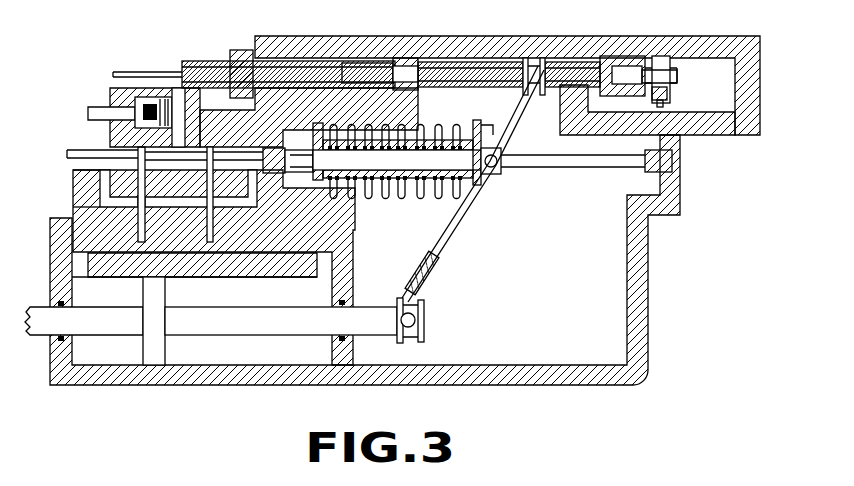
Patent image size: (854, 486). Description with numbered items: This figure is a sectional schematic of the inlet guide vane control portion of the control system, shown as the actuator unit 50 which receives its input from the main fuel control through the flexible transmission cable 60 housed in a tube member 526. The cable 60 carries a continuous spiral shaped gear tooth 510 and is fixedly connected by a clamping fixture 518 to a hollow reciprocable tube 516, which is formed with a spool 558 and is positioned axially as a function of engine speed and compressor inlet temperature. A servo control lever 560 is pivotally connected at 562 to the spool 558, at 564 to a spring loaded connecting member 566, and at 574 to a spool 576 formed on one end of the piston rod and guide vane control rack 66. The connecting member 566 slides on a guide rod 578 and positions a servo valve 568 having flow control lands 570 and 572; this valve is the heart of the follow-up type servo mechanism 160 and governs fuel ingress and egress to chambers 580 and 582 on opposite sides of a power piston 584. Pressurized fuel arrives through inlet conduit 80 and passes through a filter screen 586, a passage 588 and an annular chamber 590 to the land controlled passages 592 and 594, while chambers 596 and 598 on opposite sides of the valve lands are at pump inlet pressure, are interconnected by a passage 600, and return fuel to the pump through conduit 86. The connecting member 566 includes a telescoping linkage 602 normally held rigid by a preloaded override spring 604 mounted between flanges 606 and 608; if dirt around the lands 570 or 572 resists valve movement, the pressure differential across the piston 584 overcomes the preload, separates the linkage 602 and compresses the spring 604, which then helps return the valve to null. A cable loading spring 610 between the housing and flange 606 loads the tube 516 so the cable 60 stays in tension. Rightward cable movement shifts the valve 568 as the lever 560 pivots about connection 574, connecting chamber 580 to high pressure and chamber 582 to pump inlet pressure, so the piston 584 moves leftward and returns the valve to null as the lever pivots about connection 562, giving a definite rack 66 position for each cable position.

The regulator assembly 50 is at (413, 36).
The flexible transmission cable 60 is at (166, 72).
The rack and rod 66 is at (37, 332).
The conduit 80 is at (100, 108).
The conduit 86 is at (67, 154).
The follow-up type servo mechanism 160 is at (418, 177).
The spiral shaped gear tooth 510 is at (295, 65).
The hollow reciprocable tube 516 is at (537, 75).
The clamping fixture 518 is at (627, 64).
The tube member 526 is at (196, 62).
The spool 558 is at (533, 72).
The servo control lever 560 is at (512, 133).
The pivotal connection 562 is at (534, 93).
The pivotal connection 564 is at (491, 178).
The spring loaded connecting member 566 is at (474, 128).
The servo valve 568 is at (192, 157).
The flow control land 570 is at (232, 152).
The flow control land 572 is at (105, 188).
The pivotal connection 574 is at (418, 313).
The spool 576 is at (424, 330).
The guide rod 578 is at (582, 165).
The chamber 580 is at (227, 299).
The chamber 582 is at (130, 300).
The power piston 584 is at (155, 351).
The filter screen 586 is at (148, 100).
The passage 588 is at (178, 108).
The annular chamber 590 is at (160, 168).
The servo valve land controlled passage 592 is at (213, 220).
The servo valve land controlled passage 594 is at (145, 226).
The chamber 596 is at (557, 250).
The chamber 598 is at (90, 164).
The passage 600 is at (100, 194).
The telescoping linkage 602 is at (414, 195).
The override spring 604 is at (378, 198).
The flange 606 is at (482, 138).
The flange 608 is at (332, 130).
The cable loading spring 610 is at (385, 130).